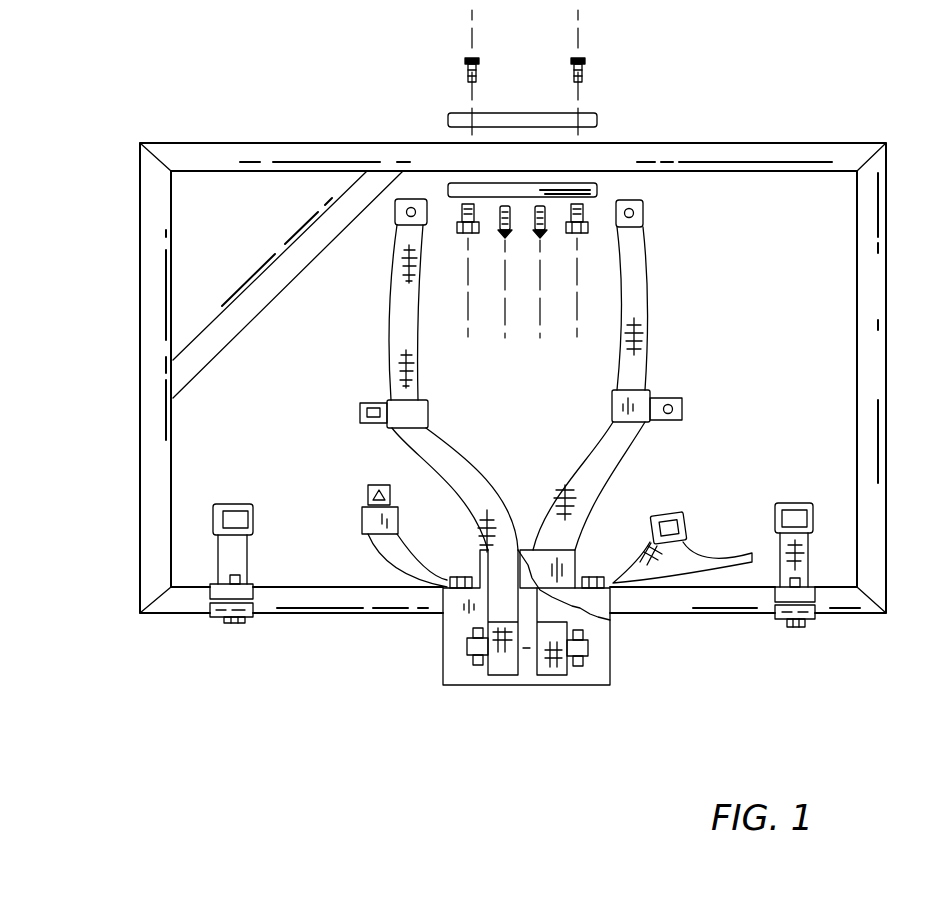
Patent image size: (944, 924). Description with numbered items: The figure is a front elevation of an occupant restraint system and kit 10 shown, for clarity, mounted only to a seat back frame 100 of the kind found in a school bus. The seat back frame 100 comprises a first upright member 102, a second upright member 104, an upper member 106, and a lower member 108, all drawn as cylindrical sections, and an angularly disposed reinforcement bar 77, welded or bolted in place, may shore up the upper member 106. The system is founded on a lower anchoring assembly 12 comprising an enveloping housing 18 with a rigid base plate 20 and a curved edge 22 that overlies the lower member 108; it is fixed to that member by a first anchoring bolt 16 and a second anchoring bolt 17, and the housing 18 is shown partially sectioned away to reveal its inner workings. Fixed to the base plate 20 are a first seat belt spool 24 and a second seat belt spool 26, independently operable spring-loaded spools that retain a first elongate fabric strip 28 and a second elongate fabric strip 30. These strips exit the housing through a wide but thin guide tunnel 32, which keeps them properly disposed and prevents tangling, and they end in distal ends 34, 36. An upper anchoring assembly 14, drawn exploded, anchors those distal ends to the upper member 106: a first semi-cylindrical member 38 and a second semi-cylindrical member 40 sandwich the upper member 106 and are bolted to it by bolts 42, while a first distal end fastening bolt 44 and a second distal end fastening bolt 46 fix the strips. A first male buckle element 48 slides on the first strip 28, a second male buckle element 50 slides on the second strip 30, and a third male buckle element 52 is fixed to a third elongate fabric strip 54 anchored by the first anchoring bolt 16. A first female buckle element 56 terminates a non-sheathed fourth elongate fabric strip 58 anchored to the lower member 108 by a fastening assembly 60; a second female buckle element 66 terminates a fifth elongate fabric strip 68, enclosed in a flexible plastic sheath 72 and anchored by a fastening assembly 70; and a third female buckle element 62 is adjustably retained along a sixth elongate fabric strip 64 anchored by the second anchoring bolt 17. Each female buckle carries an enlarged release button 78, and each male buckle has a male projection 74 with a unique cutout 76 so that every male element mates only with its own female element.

The occupant restraint system and kit 10 is at (330, 700).
The lower anchoring assembly 12 is at (425, 697).
The upper anchoring assembly 14 is at (643, 102).
The first anchoring bolt 16 is at (463, 575).
The second anchoring bolt 17 is at (596, 575).
The enveloping housing 18 is at (615, 613).
The rigid base plate 20 is at (605, 667).
The curved edge 22 is at (677, 587).
The first seat belt spool 24 is at (500, 675).
The second seat belt spool 26 is at (565, 674).
The first elongate fabric strip 28 is at (489, 478).
The second elongate fabric strip 30 is at (565, 478).
The guide tunnel 32 is at (525, 548).
The distal end 34 is at (395, 210).
The distal end 36 is at (645, 215).
The first semi-cylindrical member 38 is at (512, 113).
The second semi-cylindrical member 40 is at (517, 197).
The bolts 42 is at (468, 58).
The first distal end fastening bolt 44 is at (463, 235).
The second distal end fastening bolt 46 is at (582, 235).
The first male buckle element 48 is at (390, 400).
The second male buckle element 50 is at (648, 392).
The third male buckle element 52 is at (365, 505).
The third elongate fabric strip 54 is at (382, 558).
The first female buckle element 56 is at (240, 504).
The fourth elongate fabric strip 58 is at (220, 547).
The fastening assembly 60 is at (222, 620).
The third female buckle element 62 is at (675, 513).
The sixth elongate fabric strip 64 is at (727, 587).
The second female buckle element 66 is at (790, 510).
The fifth elongate fabric strip 68 is at (817, 533).
The fastening assembly 70 is at (805, 625).
The flexible plastic sheath 72 is at (805, 580).
The male projection 74 is at (360, 408).
The cutout 76 is at (375, 418).
The angularly disposed reinforcement bar 77 is at (205, 325).
The enlarged release button 78 is at (220, 520).
The seat back frame 100 is at (826, 110).
The first upright member 102 is at (143, 265).
The second upright member 104 is at (855, 372).
The upper member 106 is at (770, 143).
The lower member 108 is at (716, 615).